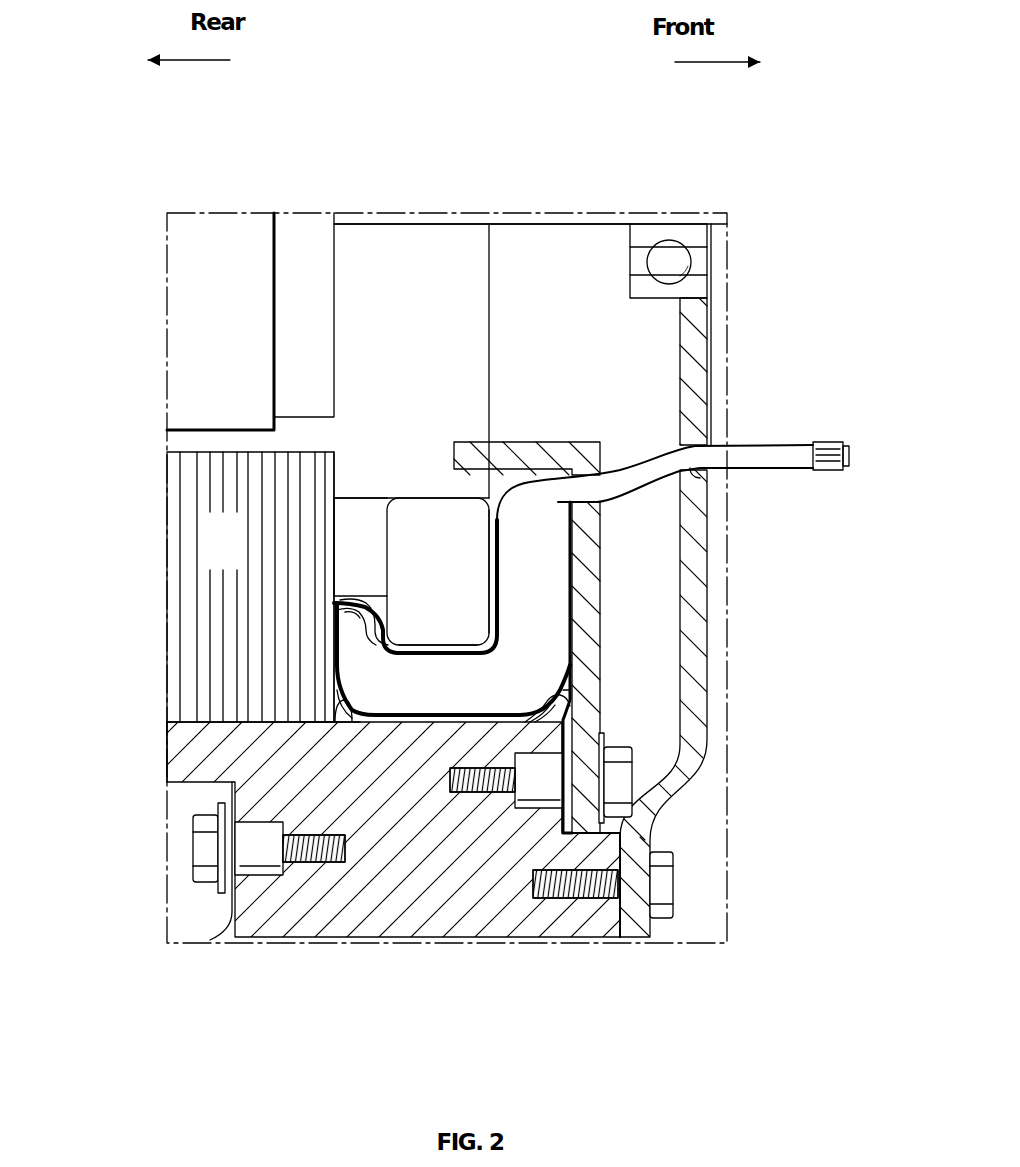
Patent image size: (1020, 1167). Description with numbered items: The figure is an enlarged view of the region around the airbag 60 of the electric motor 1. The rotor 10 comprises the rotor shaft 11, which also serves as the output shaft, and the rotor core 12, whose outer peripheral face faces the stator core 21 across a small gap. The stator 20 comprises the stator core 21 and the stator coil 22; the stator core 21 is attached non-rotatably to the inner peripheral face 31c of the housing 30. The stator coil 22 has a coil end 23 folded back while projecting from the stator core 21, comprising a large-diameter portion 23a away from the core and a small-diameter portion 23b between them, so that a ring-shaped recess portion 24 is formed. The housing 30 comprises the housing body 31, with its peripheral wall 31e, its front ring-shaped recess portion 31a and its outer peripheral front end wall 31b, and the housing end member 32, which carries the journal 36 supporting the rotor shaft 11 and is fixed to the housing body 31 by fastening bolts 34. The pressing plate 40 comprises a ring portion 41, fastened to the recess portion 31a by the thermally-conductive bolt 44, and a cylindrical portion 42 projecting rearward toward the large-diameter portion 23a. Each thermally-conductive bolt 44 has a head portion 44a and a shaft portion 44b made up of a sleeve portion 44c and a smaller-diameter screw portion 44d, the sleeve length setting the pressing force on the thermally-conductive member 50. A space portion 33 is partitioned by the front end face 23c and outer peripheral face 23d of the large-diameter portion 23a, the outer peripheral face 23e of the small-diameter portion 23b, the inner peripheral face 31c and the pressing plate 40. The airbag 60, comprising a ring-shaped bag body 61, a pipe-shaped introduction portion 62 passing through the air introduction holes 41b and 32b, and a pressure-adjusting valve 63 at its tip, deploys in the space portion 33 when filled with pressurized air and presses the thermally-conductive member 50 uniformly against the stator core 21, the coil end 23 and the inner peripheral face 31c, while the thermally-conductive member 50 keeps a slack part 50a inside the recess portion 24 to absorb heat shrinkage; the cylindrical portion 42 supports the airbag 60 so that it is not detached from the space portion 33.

The electric motor 1 is at (610, 150).
The rotor 10 is at (502, 245).
The rotor shaft 11 is at (392, 225).
The rotor core 12 is at (230, 337).
The stator 20 is at (211, 578).
The stator core 21 is at (236, 553).
The stator coil 22 is at (411, 547).
The coil end 23 is at (445, 401).
The large-diameter portion 23a is at (415, 494).
The small-diameter portion 23b is at (363, 494).
The front end face 23c is at (493, 536).
The outer peripheral face 23d is at (428, 640).
The outer peripheral face 23e is at (350, 593).
The recess portion 24 is at (355, 618).
The housing 30 is at (187, 795).
The housing body 31 is at (371, 883).
The recess portion 31a is at (578, 938).
The outer peripheral front end wall 31b is at (614, 940).
The inner peripheral face 31c is at (328, 724).
The peripheral wall 31e is at (168, 745).
The housing end member 32 is at (744, 369).
The air introduction hole 32b is at (720, 472).
The space portion 33 is at (566, 692).
The fastening bolt 34 is at (687, 940).
The journal 36 is at (707, 290).
The pressing plate 40 is at (562, 591).
The ring portion 41 is at (600, 605).
The air introduction hole 41b is at (600, 500).
The cylindrical portion 42 is at (528, 441).
The thermally-conductive bolt 44 is at (654, 703).
The head portion 44a is at (612, 745).
The shaft portion 44b is at (539, 889).
The sleeve portion 44c is at (568, 800).
The screw portion 44d is at (530, 792).
The thermally-conductive member 50 is at (334, 753).
The slack part 50a is at (340, 602).
The airbag 60 is at (675, 442).
The bag body 61 is at (448, 695).
The introduction portion 62 is at (640, 462).
The pressure-adjusting valve 63 is at (820, 443).